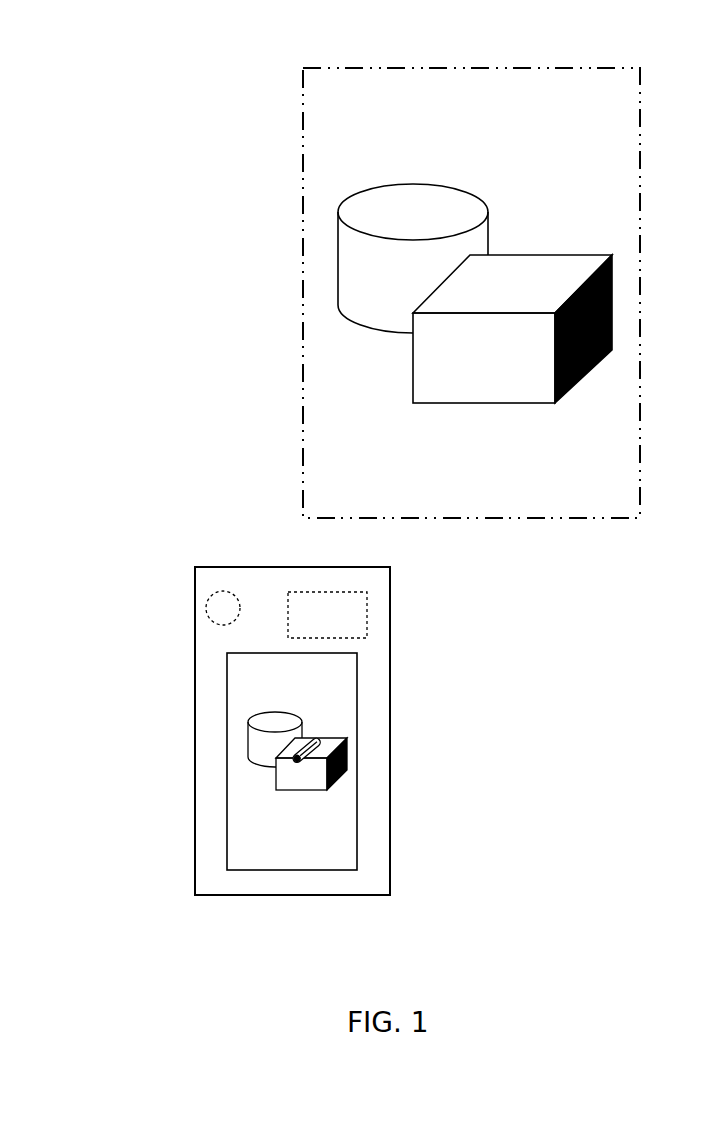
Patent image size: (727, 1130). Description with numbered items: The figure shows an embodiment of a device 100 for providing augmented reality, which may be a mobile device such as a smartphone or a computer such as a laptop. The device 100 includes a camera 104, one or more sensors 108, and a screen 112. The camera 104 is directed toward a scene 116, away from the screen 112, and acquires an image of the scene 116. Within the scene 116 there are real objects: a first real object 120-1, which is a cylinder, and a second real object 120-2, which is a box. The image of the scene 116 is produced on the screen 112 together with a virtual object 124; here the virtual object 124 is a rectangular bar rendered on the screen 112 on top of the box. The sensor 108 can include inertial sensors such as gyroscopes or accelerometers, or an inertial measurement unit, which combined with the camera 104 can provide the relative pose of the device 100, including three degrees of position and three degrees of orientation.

The scene 116 is at (352, 68).
The first real object 120-1 is at (388, 192).
The second real object 120-2 is at (460, 403).
The device 100 is at (260, 567).
The camera 104 is at (207, 607).
The sensor 108 is at (367, 612).
The screen 112 is at (345, 805).
The virtual object 124 is at (318, 742).